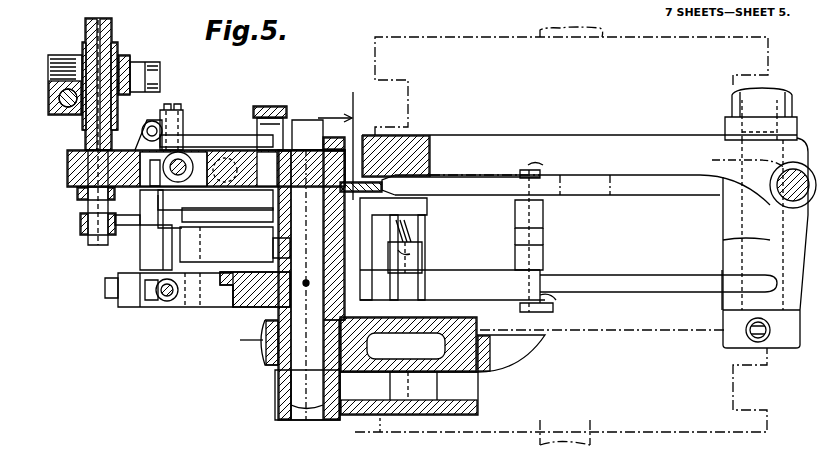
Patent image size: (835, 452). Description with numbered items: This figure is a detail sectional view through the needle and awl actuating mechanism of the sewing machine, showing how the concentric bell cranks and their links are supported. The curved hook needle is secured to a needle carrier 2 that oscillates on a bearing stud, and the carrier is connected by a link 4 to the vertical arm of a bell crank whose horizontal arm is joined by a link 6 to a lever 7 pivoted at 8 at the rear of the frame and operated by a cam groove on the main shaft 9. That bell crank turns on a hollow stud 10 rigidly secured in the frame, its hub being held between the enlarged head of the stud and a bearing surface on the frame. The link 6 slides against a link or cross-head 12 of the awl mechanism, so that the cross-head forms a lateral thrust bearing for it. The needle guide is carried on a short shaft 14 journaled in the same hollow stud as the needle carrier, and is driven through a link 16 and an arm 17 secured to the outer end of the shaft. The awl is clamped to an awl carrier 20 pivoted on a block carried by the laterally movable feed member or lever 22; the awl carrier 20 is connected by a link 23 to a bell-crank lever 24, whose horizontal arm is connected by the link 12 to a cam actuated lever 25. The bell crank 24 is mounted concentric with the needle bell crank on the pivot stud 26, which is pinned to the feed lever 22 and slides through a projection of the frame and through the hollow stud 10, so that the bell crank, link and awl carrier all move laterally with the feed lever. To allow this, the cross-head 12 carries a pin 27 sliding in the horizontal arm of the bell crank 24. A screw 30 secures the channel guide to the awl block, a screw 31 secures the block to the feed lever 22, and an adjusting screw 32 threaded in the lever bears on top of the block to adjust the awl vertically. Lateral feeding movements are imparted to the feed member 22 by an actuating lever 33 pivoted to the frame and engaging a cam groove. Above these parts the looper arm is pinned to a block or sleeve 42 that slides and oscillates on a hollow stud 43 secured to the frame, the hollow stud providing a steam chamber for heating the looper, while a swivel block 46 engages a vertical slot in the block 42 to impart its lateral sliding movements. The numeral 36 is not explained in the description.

The needle carrier 2 is at (203, 208).
The link 4 is at (248, 222).
The link 6 is at (410, 208).
The lever 7 is at (462, 192).
The pivot 8 is at (776, 349).
The main shaft 9 is at (292, 219).
The hollow stud 10 is at (298, 165).
The link or cross-head 12 is at (405, 247).
The short shaft 14 is at (118, 150).
The link 16 is at (228, 140).
The arm 17 is at (175, 118).
The awl carrier 20 is at (168, 243).
The feed member or lever 22 is at (348, 322).
The link 23 is at (238, 262).
The bell-crank lever 24 is at (400, 238).
The cam actuated lever 25 is at (660, 292).
The pivot stud 26 is at (305, 380).
The pin 27 is at (375, 285).
The screw 30 is at (108, 284).
The screw 31 is at (138, 308).
The adjusting screw 32 is at (165, 303).
The actuating lever 33 is at (422, 396).
The block 36 is at (193, 165).
The block or sleeve 42 is at (112, 48).
The hollow stud 43 is at (88, 36).
The swivel block 46 is at (132, 66).